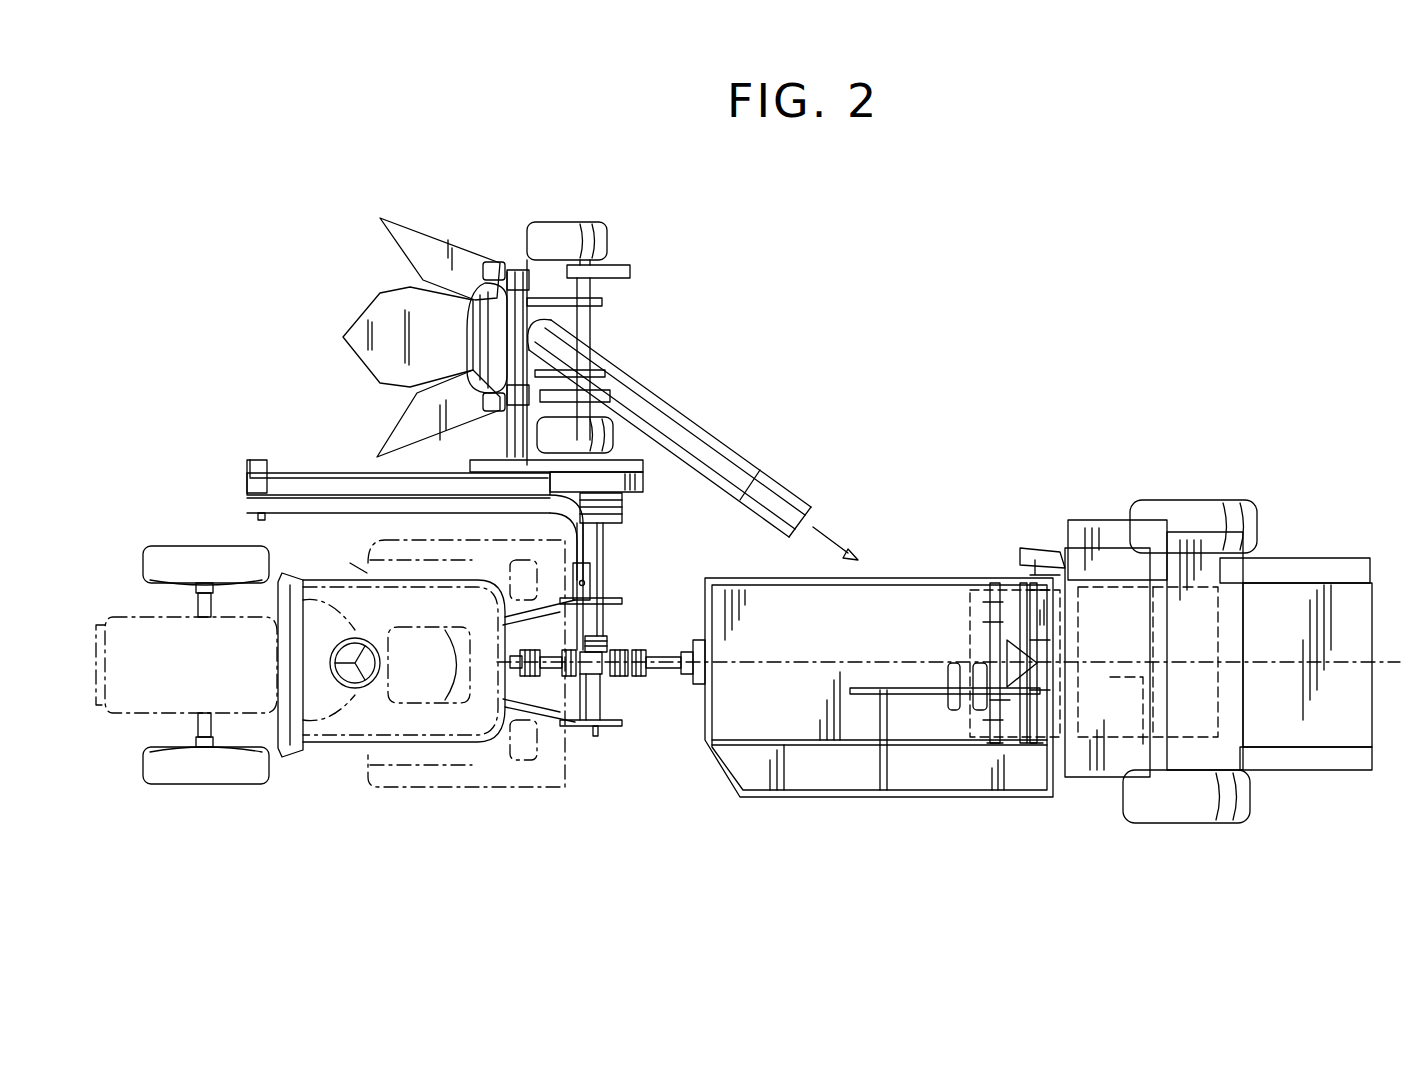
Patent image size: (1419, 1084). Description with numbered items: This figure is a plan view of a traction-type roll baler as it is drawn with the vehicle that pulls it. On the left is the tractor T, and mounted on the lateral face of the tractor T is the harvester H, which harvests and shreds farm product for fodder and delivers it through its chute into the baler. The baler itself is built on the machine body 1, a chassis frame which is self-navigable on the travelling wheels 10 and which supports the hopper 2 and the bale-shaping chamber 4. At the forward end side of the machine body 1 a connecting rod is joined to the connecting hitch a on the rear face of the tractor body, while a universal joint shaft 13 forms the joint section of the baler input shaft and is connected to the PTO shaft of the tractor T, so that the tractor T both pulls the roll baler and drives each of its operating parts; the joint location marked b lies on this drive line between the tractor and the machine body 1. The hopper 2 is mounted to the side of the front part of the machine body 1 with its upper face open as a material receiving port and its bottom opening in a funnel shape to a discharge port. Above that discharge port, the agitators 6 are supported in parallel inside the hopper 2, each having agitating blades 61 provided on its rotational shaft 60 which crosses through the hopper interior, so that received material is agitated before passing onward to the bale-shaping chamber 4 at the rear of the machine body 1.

The tractor T is at (325, 757).
The harvester H is at (398, 272).
The universal joint shaft 13 is at (634, 652).
The connecting hitch a is at (583, 722).
The universal joint b is at (530, 678).
The hopper 2 is at (928, 578).
The agitator 6 is at (892, 590).
The rotational shaft 60 is at (997, 610).
The agitating blade 61 is at (1010, 640).
The machine body 1 is at (1057, 770).
The bale-shaping chamber 4 is at (1313, 558).
The travelling wheel 10 is at (1230, 797).